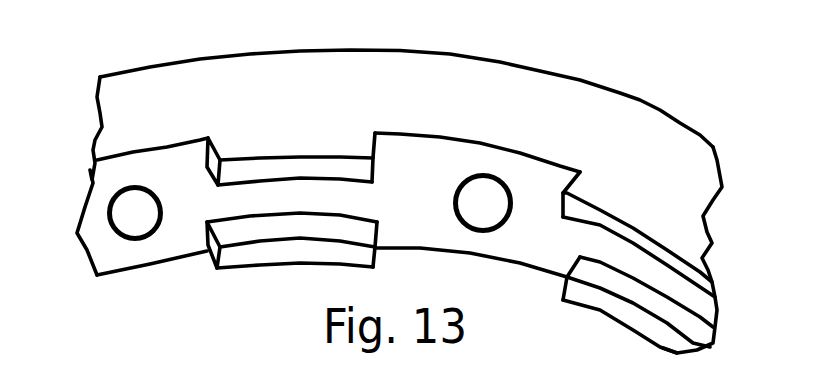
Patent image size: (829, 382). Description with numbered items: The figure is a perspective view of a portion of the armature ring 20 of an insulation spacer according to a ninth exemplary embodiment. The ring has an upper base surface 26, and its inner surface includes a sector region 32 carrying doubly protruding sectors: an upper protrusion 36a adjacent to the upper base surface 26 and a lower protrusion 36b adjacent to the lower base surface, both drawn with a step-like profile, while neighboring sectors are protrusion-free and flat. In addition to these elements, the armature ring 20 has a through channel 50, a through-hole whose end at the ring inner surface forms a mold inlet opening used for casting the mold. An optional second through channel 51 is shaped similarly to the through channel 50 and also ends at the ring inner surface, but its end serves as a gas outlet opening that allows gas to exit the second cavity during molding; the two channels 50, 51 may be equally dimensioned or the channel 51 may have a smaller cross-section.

The armature ring 20 is at (522, 58).
The upper base surface 26 is at (168, 84).
The lower face 32 is at (118, 176).
The upper protrusion 36a is at (312, 152).
The lower protrusion 36b is at (265, 255).
The through channel 50 is at (128, 245).
The through channel 51 is at (512, 221).